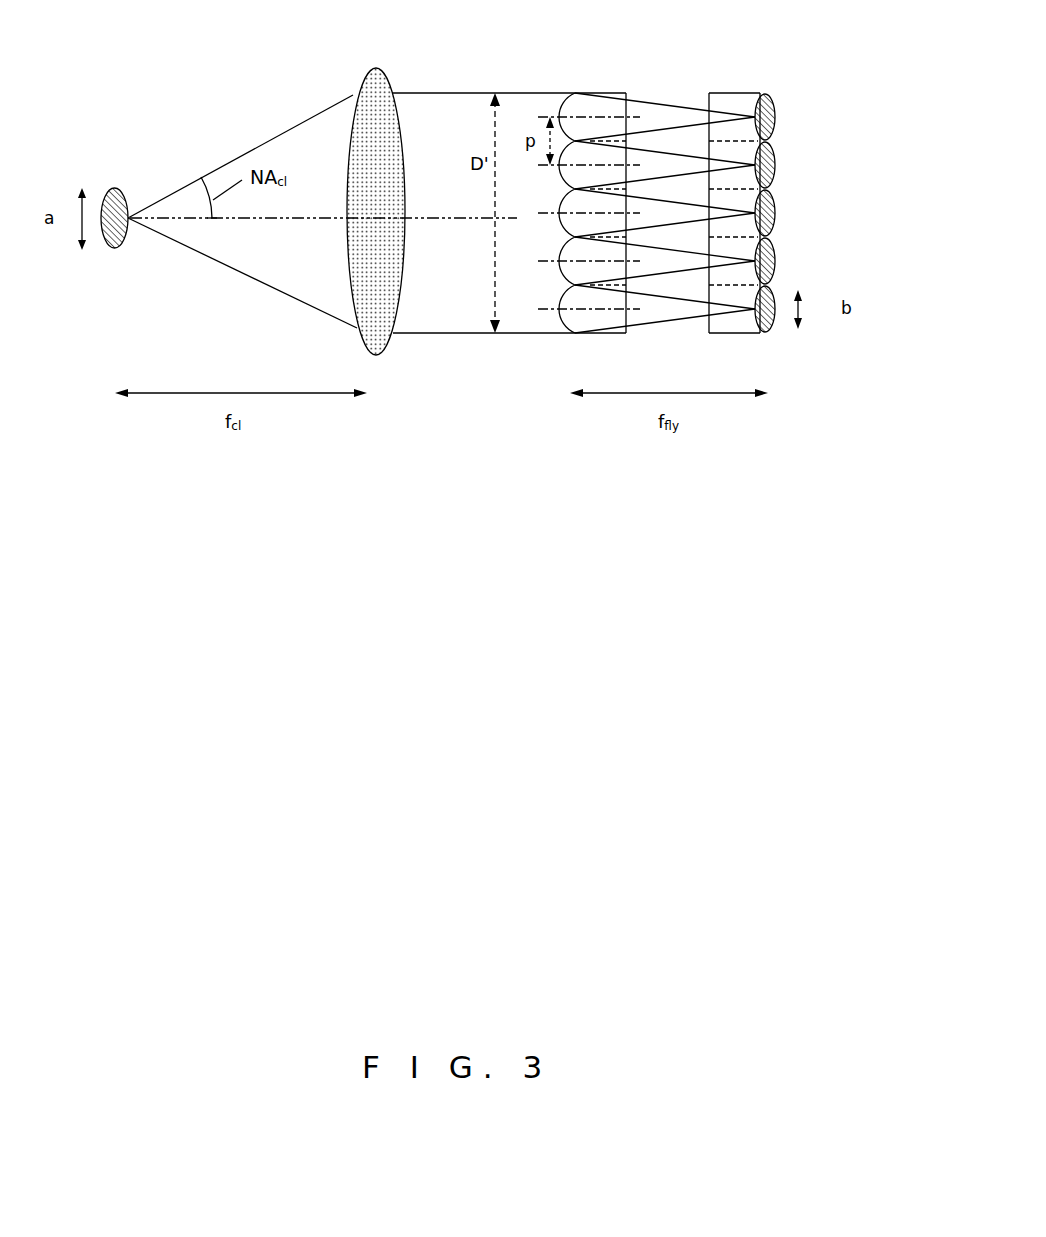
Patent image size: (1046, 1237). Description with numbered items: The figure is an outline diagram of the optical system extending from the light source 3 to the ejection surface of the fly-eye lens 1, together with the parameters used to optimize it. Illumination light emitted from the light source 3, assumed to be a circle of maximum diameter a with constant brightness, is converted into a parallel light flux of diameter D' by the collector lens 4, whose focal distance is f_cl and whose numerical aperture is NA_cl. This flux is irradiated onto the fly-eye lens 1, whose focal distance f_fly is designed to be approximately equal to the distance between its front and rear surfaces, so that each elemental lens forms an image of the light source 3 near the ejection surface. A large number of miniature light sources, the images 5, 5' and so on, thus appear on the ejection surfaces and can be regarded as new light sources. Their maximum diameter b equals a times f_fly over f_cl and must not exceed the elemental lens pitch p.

The fly-eye lens 1 is at (597, 92).
The light source 3 is at (123, 188).
The collector lens 4 is at (381, 70).
The image of the light source 5 is at (799, 96).
The image of the light source 5' is at (803, 146).